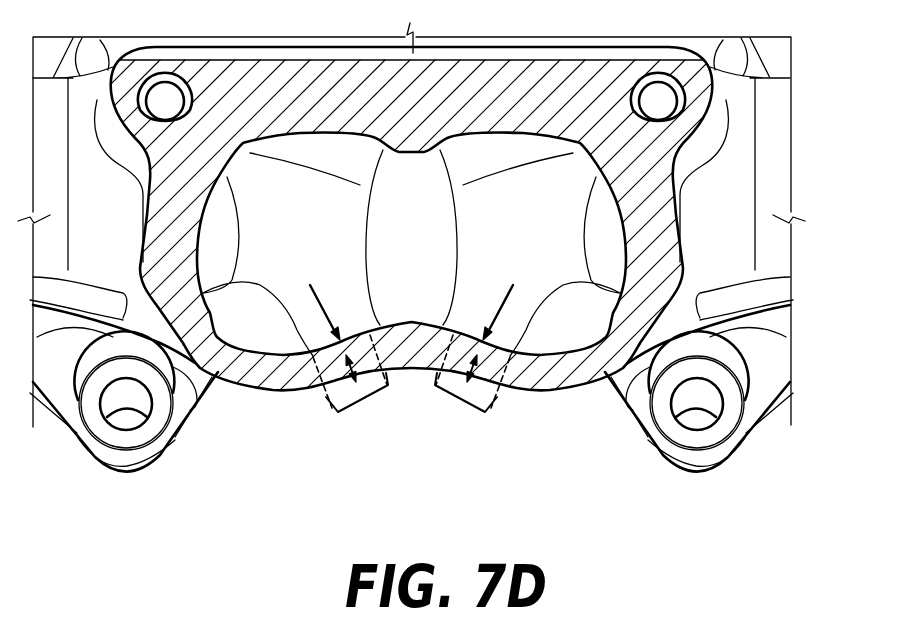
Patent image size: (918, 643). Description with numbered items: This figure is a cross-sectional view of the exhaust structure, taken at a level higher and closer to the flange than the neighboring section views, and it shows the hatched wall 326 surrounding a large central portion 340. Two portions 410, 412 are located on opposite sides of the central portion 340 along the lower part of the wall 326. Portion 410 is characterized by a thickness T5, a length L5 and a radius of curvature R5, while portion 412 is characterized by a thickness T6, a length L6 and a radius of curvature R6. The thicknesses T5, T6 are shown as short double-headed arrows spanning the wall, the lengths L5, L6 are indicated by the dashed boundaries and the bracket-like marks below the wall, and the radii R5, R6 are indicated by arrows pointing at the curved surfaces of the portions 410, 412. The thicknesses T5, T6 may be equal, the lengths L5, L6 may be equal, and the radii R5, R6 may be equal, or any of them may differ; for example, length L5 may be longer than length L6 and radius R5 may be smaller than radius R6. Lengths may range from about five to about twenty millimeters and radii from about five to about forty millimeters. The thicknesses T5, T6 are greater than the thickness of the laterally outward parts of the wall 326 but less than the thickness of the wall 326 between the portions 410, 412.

The wall 326 is at (257, 390).
The central portion 340 is at (428, 233).
The portion 410 is at (313, 356).
The portion 412 is at (455, 336).
The radius of curvature R5 is at (320, 300).
The radius of curvature R6 is at (501, 301).
The thickness T5 is at (345, 370).
The thickness T6 is at (478, 370).
The length L5 is at (357, 404).
The length L6 is at (466, 404).